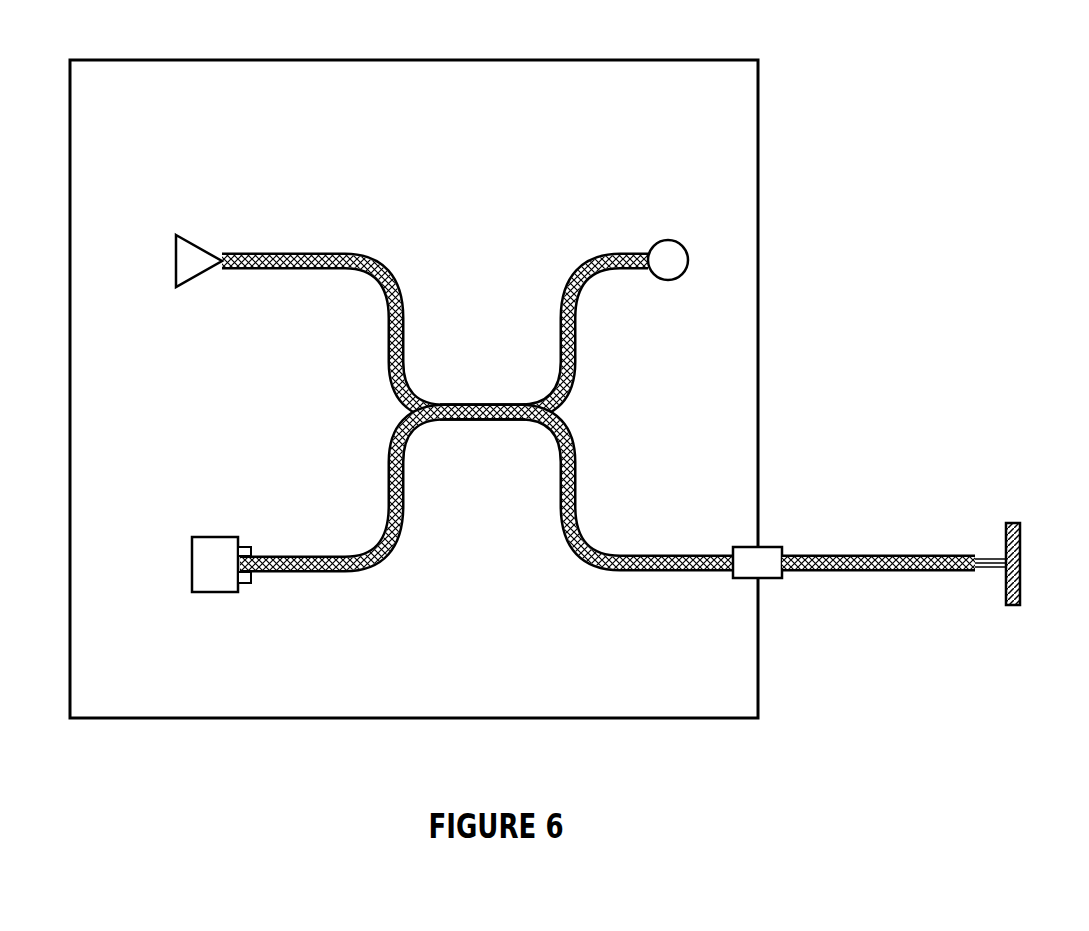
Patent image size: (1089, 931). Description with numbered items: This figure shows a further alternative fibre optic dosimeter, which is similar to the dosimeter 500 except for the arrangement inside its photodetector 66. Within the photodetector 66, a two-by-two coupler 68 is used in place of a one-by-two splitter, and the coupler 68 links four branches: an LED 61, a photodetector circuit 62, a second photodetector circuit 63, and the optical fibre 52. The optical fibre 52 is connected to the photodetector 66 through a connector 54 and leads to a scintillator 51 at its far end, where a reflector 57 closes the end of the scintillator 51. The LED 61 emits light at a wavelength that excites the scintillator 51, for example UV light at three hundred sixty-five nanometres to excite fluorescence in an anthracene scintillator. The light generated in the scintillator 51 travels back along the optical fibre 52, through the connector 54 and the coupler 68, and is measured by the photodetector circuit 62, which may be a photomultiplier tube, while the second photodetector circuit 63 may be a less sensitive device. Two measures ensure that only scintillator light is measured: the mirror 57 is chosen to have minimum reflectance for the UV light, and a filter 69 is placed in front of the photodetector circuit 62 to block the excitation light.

The dosimeter 500 is at (806, 153).
The photodetector 66 is at (760, 646).
The 2×2 coupler 68 is at (578, 410).
The filter 69 is at (253, 550).
The LED 61 is at (178, 262).
The second photodetector circuit 63 is at (667, 272).
The photodetector circuit 62 is at (193, 555).
The connector 54 is at (777, 548).
The optical fibre 52 is at (874, 558).
The scintillator 51 is at (998, 572).
The reflector (mirror) 57 is at (1022, 533).